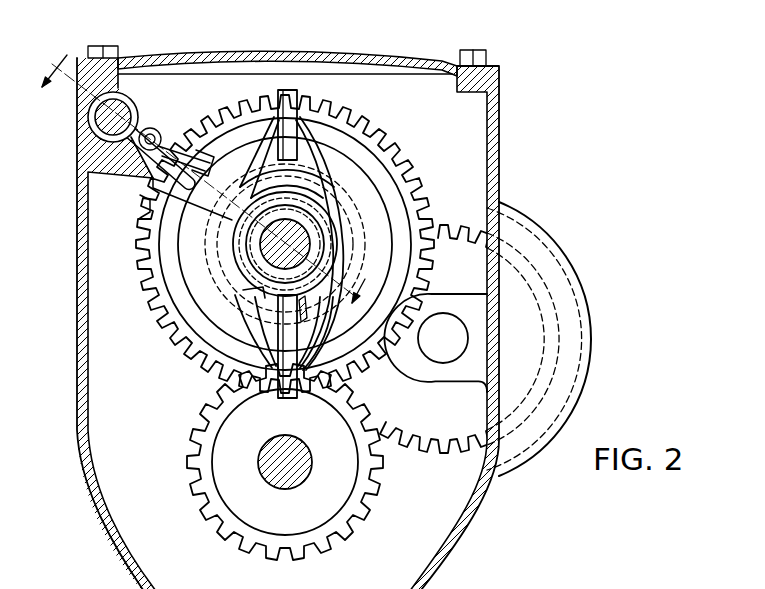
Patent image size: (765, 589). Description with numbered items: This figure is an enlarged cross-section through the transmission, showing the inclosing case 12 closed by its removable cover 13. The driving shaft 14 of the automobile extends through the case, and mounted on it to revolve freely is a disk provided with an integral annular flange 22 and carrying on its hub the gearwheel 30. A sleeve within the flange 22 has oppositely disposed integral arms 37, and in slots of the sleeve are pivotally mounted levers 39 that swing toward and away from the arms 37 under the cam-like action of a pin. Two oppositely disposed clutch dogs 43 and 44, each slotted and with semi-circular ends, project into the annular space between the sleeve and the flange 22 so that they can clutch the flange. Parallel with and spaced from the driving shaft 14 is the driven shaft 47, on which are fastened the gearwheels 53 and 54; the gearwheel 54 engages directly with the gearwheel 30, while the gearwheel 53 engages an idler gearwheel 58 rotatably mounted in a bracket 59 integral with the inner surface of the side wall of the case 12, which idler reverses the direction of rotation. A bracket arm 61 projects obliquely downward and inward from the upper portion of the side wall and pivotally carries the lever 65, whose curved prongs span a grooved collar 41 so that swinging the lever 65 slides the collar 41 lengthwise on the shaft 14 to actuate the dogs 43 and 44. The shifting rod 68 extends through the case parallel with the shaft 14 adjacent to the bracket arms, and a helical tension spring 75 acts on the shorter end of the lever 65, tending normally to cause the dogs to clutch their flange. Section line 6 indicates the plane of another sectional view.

The section line 6- 6 is at (203, 181).
The inclosing case 12 is at (500, 122).
The removable cover 13 is at (370, 52).
The driving shaft 14 is at (306, 230).
The annular flange 22 is at (388, 188).
The gearwheel 30 is at (387, 133).
The arm 37 is at (313, 333).
The lever 39 is at (250, 323).
The grooved collar 41 is at (320, 243).
The clutch dog 43 is at (290, 98).
The clutch dog 44 is at (282, 396).
The driven shaft 47 is at (268, 470).
The gearwheel 53 is at (362, 520).
The gearwheel 54 is at (318, 507).
The idler gearwheel 58 is at (438, 448).
The bracket 59 is at (452, 372).
The bracket arm 61 is at (132, 195).
The lever 65 is at (163, 149).
The shifting rod 68 is at (123, 108).
The helical tension spring 75 is at (153, 131).